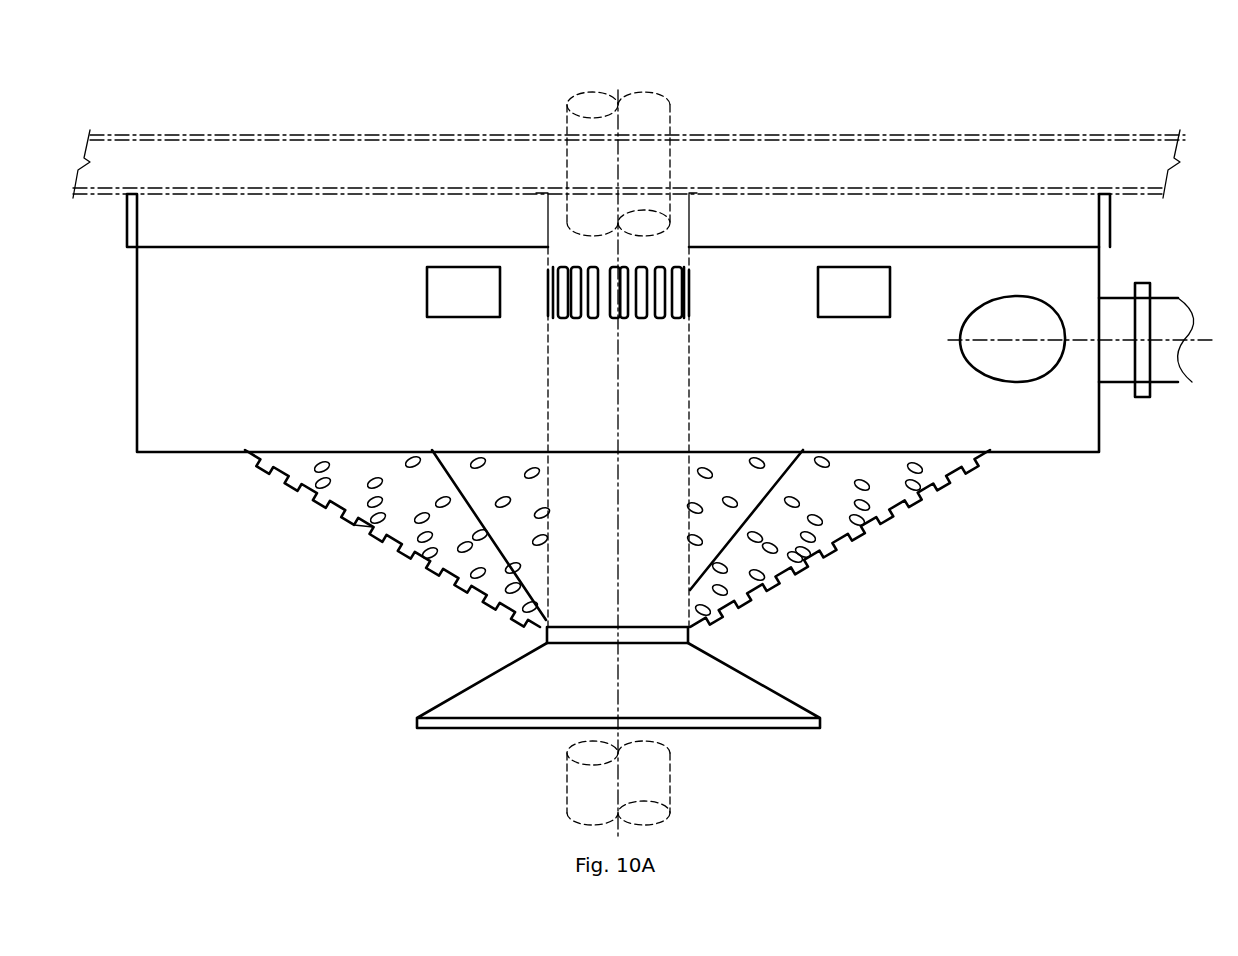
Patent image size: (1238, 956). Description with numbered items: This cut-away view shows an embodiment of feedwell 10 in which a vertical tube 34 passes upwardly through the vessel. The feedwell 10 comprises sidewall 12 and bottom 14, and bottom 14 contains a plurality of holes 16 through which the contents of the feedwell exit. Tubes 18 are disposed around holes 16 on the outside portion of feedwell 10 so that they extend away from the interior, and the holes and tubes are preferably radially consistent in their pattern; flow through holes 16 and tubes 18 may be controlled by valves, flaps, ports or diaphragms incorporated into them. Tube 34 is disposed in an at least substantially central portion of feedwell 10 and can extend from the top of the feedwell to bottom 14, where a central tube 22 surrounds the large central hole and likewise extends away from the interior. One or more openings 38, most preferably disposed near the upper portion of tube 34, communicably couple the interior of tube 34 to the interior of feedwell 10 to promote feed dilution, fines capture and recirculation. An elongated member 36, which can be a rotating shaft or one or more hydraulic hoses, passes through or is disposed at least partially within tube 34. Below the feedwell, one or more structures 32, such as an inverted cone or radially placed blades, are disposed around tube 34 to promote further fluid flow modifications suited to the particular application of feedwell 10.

The feedwell 10 is at (840, 112).
The sidewall 12 is at (248, 282).
The bottom 14 is at (347, 492).
The holes 16 is at (822, 518).
The tubes 18 is at (394, 552).
The tube 22 is at (547, 630).
The structures 32 is at (745, 680).
The tube 34 is at (689, 357).
The elongated member 36 is at (670, 110).
The openings 38 is at (660, 267).